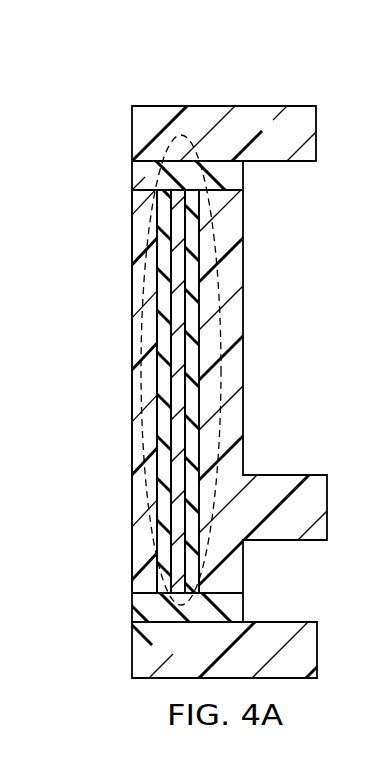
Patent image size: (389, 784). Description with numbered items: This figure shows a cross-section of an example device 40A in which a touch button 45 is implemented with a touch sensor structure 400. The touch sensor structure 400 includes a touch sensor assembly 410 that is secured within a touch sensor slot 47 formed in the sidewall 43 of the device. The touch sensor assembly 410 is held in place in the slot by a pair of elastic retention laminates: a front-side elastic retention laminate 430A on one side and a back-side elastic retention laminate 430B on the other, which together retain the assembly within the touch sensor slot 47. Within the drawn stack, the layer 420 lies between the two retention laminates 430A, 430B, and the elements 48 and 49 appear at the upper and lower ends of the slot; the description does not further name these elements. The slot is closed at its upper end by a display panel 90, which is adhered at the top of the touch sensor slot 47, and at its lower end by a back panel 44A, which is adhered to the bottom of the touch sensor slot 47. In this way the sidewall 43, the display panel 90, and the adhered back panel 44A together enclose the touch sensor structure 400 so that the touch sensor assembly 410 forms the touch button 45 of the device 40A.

The device 40A is at (177, 49).
The display panel 90 is at (281, 143).
The upper spacer 48 is at (140, 172).
The touch button 45 is at (133, 393).
The sidewall 43 is at (140, 553).
The touch sensor structure 400 is at (125, 365).
The touch sensor assembly 410 is at (159, 146).
The front-side elastic retention laminate 430A is at (163, 252).
The intermediate layer 420 is at (192, 326).
The back-side elastic retention laminate 430B is at (200, 235).
The lower spacer 49 is at (140, 604).
The touch sensor slot 47 is at (183, 602).
The back panel 44A is at (140, 657).